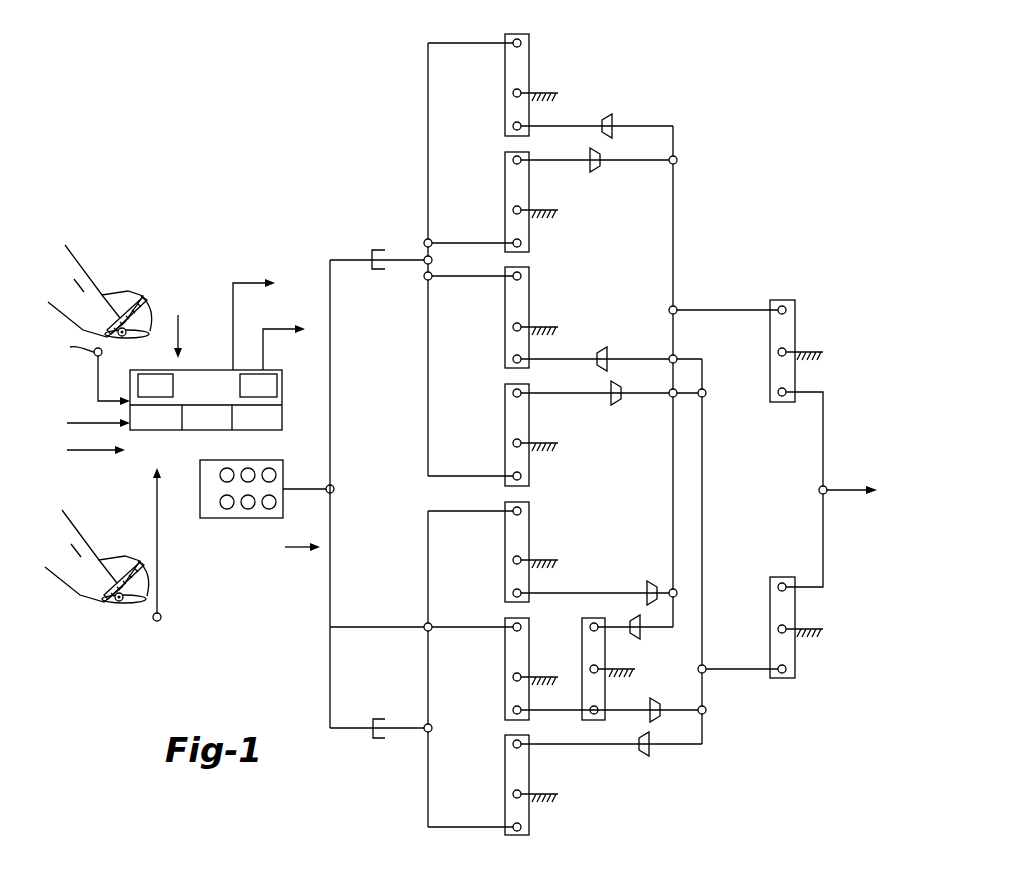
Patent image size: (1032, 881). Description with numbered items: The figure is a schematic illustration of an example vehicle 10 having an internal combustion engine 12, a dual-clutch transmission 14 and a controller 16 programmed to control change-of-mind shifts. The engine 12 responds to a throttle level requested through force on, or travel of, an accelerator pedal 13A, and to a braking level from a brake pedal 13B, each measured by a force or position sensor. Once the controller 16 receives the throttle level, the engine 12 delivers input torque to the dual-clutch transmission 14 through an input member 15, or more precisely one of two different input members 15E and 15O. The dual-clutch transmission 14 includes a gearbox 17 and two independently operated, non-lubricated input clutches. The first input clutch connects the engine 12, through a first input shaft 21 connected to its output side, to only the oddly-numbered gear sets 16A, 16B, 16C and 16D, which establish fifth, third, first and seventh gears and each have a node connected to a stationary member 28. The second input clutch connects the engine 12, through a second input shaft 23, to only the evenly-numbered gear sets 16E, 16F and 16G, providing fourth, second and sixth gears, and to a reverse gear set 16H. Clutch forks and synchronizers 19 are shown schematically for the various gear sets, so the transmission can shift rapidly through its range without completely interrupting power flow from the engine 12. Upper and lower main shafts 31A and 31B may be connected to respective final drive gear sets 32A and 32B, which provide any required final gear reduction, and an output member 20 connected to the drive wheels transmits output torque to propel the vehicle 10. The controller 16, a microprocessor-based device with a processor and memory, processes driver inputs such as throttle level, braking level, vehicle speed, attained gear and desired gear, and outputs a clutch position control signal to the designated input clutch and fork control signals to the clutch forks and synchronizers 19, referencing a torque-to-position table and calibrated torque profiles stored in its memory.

The vehicle 10 is at (746, 38).
The internal combustion engine 12 is at (232, 518).
The accelerator pedal 13A is at (143, 292).
The brake pedal 13B is at (140, 560).
The dual-clutch transmission 14 is at (582, 63).
The input member 15 is at (305, 487).
The input member 15O is at (330, 372).
The input member 15E is at (330, 610).
The controller 16 is at (282, 385).
The oddly-numbered gear set 16A is at (505, 87).
The oddly-numbered gear set 16B is at (505, 204).
The oddly-numbered gear set 16C is at (505, 323).
The oddly-numbered gear set 16D is at (505, 439).
The evenly-numbered gear set 16E is at (505, 556).
The evenly-numbered gear set 16F is at (505, 673).
The evenly-numbered gear set 16G is at (505, 791).
The reverse gear set 16H is at (582, 658).
The gearbox 17 is at (646, 831).
The clutch forks and synchronizers 19 is at (640, 80).
The output member 20 is at (847, 487).
The first input shaft 21 is at (389, 121).
The second input shaft 23 is at (388, 781).
The stationary member 28 is at (556, 97).
The upper main shaft 31A is at (726, 308).
The lower main shaft 31B is at (742, 672).
The final drive gear set 32A is at (795, 318).
The final drive gear set 32B is at (795, 660).